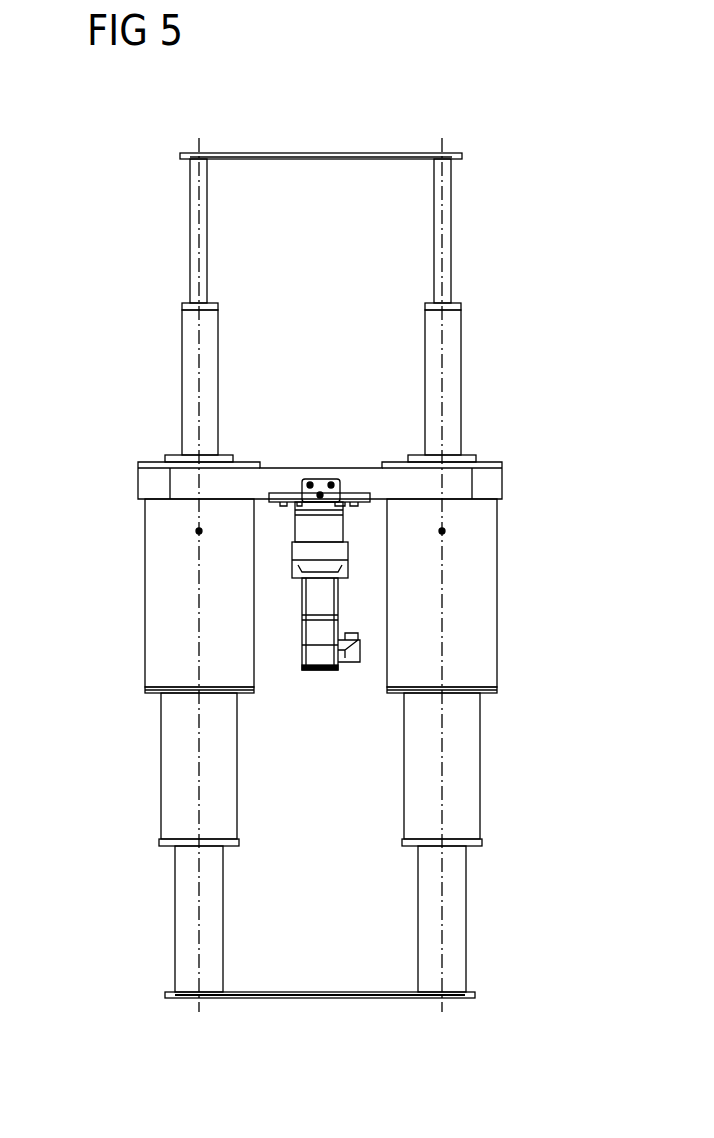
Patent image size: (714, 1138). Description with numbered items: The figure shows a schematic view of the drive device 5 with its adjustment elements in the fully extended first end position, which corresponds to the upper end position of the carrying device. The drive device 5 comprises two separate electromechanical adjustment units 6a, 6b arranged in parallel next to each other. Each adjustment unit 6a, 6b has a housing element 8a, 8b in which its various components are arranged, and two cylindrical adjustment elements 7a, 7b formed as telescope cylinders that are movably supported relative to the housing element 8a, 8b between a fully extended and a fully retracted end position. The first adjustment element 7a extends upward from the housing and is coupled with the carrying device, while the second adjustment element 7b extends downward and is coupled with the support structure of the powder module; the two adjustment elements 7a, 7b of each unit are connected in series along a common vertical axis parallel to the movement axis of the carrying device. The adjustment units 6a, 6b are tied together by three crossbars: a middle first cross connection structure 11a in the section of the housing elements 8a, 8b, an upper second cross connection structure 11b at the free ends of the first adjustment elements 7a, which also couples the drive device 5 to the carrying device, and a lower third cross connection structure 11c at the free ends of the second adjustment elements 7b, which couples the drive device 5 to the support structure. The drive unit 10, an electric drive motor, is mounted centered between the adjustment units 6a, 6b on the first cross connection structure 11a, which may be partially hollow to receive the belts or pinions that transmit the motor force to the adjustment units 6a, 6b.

The drive device 5 is at (395, 101).
The second cross connection structure 11b is at (290, 155).
The first adjustment element 7a is at (161, 281).
The first cross connection structure 11a is at (494, 483).
The housing element 8b is at (162, 600).
The housing element 8a is at (480, 600).
The adjustment unit 6b is at (136, 654).
The adjustment unit 6a is at (504, 655).
The second adjustment element 7b is at (158, 875).
The third cross connection structure 11c is at (316, 998).
The drive unit 10 is at (322, 676).